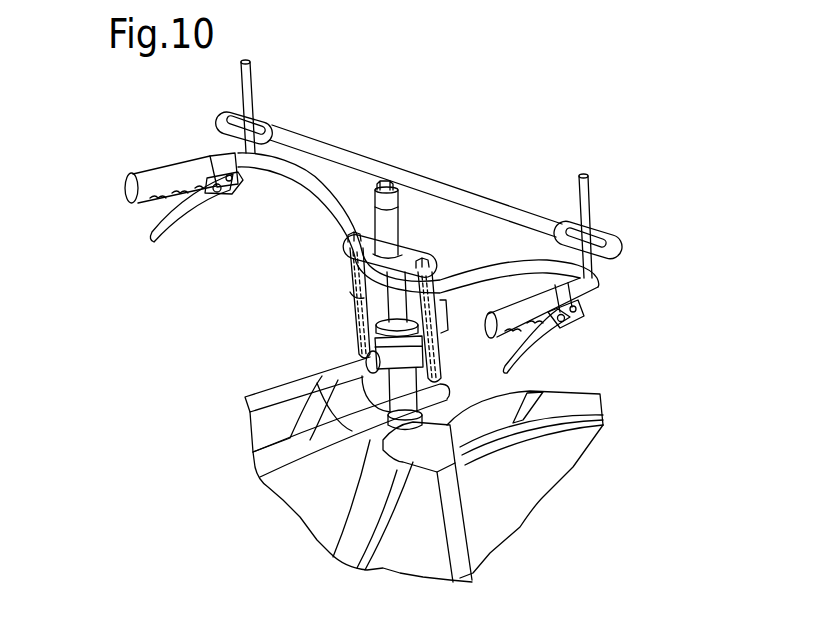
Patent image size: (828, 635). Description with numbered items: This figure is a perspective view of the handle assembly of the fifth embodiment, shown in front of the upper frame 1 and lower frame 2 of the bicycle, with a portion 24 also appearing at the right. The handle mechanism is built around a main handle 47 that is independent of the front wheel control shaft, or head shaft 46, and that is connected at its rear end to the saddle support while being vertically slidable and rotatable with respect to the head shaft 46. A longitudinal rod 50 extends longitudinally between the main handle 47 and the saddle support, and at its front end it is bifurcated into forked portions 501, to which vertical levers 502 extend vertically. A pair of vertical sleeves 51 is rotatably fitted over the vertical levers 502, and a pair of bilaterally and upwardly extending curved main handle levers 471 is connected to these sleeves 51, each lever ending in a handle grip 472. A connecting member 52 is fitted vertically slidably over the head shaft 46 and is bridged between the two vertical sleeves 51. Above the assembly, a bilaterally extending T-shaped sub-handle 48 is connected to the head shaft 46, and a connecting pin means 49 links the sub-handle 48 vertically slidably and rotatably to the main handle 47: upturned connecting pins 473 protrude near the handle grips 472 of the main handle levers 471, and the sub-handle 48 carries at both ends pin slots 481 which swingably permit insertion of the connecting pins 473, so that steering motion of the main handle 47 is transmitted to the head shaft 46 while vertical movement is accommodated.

The upper frame 1 is at (267, 395).
The lower frame 2 is at (307, 490).
The fender 24 is at (578, 390).
The head shaft 46 is at (400, 220).
The main handle 47 is at (360, 258).
The sub-handle 48 is at (376, 163).
The connecting pin means 49 is at (259, 118).
The longitudinal rod 50 is at (270, 442).
The vertical sleeve 51 is at (354, 298).
The connecting member 52 is at (347, 248).
The main handle lever 471 is at (313, 188).
The handle grip 472 is at (150, 177).
The connecting pin 473 is at (250, 72).
The pin slot 481 is at (236, 118).
The forked portion 501 is at (327, 387).
The vertical lever 502 is at (355, 320).